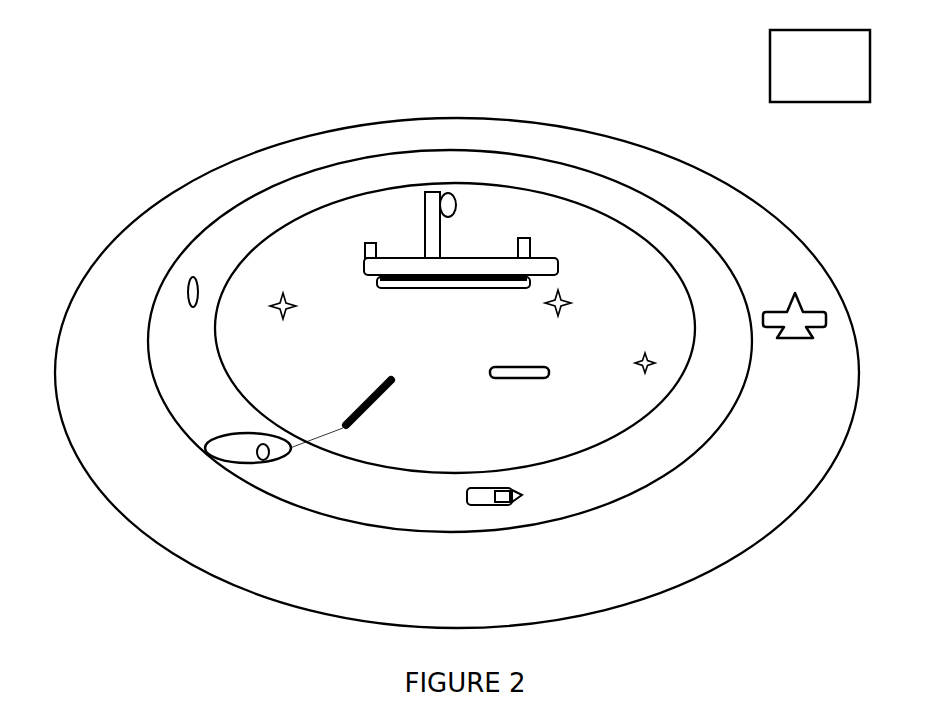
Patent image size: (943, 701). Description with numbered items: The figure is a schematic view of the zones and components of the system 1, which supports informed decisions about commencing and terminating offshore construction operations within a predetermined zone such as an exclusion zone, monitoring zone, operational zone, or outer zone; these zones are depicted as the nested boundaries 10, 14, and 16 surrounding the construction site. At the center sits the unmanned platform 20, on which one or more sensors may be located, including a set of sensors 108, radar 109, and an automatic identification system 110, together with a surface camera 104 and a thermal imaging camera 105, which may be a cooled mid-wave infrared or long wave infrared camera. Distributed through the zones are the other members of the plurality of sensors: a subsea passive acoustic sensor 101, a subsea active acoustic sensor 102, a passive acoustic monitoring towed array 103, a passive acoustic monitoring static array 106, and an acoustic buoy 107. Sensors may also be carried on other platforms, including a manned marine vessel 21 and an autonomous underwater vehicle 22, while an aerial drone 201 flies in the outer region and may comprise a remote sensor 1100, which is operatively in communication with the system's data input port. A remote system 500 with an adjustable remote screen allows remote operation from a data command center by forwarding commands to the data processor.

The system 1 is at (228, 99).
The inner zone boundary 10 is at (546, 209).
The intermediate zone boundary 14 is at (610, 196).
The outer zone boundary 16 is at (710, 213).
The platform 20 is at (412, 261).
The manned marine vessel 21 is at (218, 435).
The autonomous underwater vehicle 22 is at (522, 494).
The subsea passive acoustic sensor 101 is at (280, 318).
The subsea active acoustic sensor 102 is at (567, 298).
The passive acoustic monitoring towed array 103 is at (362, 405).
The surface camera 104 is at (532, 250).
The thermal imaging camera 105 is at (362, 254).
The passive acoustic monitoring static array 106 is at (515, 378).
The acoustic buoy 107 is at (190, 278).
The set of sensors 108 is at (465, 289).
The radar 109 is at (445, 192).
The automatic identification system 110 is at (450, 252).
The aerial drone 201 is at (826, 315).
The remote system 500 is at (820, 66).
The remote sensor 1100 is at (488, 503).